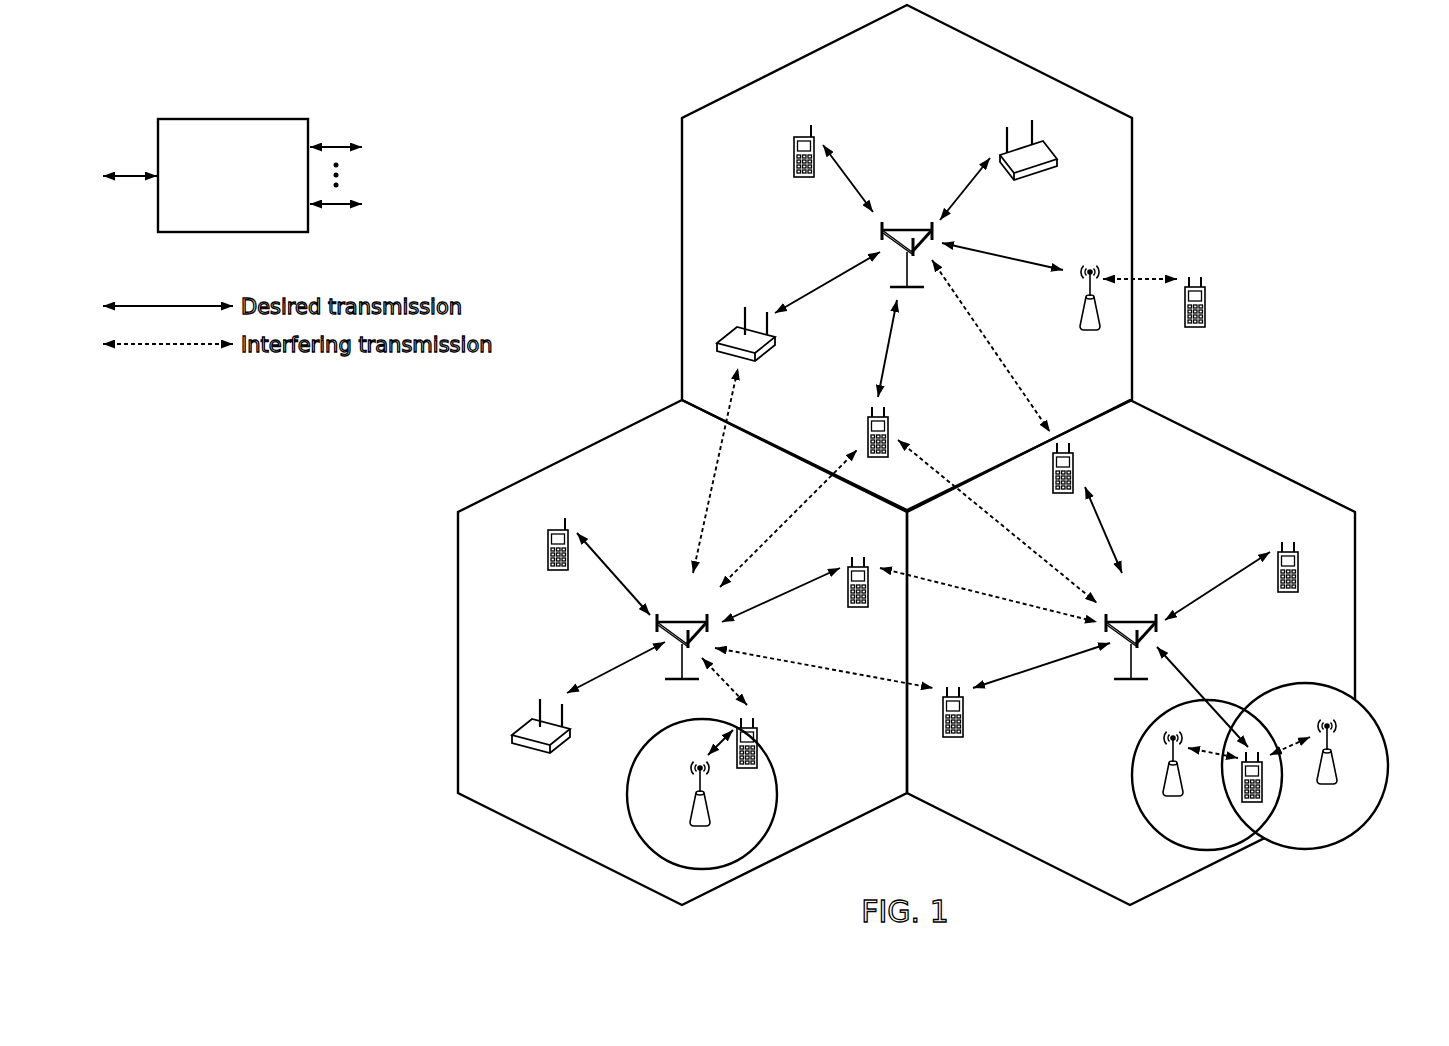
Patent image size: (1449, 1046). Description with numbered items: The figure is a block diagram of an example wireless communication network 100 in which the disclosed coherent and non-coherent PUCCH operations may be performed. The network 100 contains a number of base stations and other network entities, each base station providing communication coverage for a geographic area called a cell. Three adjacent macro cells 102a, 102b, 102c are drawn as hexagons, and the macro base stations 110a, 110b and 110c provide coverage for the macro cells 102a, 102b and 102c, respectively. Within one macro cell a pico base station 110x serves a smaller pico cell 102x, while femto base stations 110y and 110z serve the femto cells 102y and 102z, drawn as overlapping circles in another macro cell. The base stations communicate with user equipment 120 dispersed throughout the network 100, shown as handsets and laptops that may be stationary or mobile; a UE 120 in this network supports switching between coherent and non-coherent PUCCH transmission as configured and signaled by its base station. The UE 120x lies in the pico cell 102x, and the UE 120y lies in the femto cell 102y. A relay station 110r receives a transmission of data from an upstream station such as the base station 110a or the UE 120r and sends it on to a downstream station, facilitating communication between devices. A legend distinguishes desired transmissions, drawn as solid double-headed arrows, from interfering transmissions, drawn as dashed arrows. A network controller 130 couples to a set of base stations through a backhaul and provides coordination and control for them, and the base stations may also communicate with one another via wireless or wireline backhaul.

The wireless communication network 100 is at (1282, 80).
The macro cell 102a is at (1017, 60).
The macro cell 102b is at (578, 452).
The macro cell 102c is at (1244, 457).
The pico cell 102x is at (656, 737).
The femto cell 102y is at (1138, 745).
The femto cell 102z is at (1300, 683).
The macro base station 110a is at (903, 228).
The macro base station 110b is at (678, 620).
The macro base station 110c is at (1130, 620).
The relay station 110r is at (1077, 315).
The pico base station 110x is at (709, 818).
The femto base station 110y is at (1182, 790).
The femto base station 110z is at (1336, 778).
The user equipment 120 is at (792, 145).
The user equipment 120r is at (1206, 318).
The user equipment 120x is at (759, 738).
The user equipment 120y is at (1240, 796).
The network controller 130 is at (231, 118).